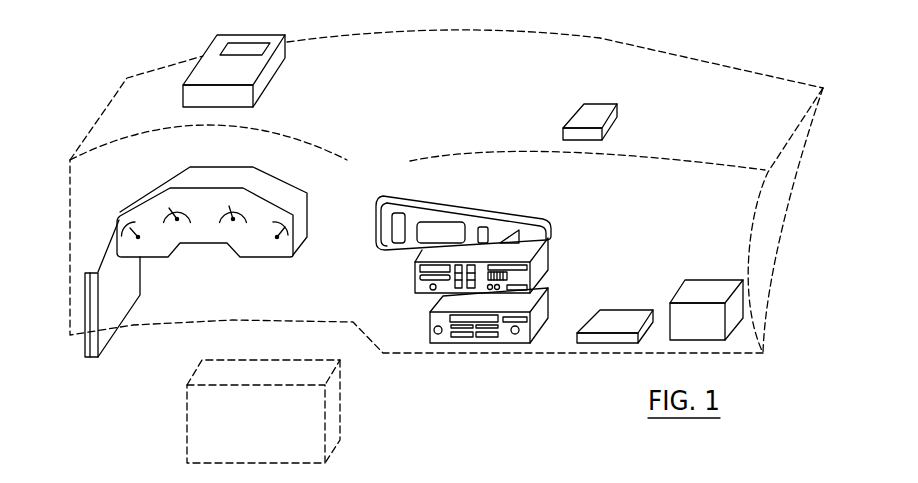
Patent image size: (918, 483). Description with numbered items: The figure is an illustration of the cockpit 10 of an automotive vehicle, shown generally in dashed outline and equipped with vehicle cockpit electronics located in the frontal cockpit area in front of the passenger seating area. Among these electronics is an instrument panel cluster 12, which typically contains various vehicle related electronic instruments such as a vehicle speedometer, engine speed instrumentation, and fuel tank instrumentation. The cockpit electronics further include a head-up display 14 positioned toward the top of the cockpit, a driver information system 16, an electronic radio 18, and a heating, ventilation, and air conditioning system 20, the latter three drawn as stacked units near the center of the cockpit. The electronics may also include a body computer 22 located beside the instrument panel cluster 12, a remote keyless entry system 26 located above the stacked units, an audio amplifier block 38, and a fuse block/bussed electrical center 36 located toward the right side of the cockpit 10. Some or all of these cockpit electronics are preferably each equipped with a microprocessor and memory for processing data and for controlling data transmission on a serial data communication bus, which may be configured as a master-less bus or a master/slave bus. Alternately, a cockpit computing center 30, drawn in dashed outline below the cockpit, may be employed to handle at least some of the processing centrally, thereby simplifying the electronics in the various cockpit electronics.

The cockpit 10 is at (735, 47).
The instrument panel cluster 12 is at (143, 195).
The head-up display 14 is at (208, 70).
The driver information system 16 is at (483, 212).
The electronic radio 18 is at (545, 265).
The heating, ventilation, and air conditioning system 20 is at (538, 320).
The body computer 22 is at (85, 348).
The remote keyless entry system 26 is at (590, 112).
The cockpit computing center 30 is at (338, 390).
The fuse block/bussed electrical center 36 is at (703, 287).
The audio amplifier block 38 is at (612, 323).